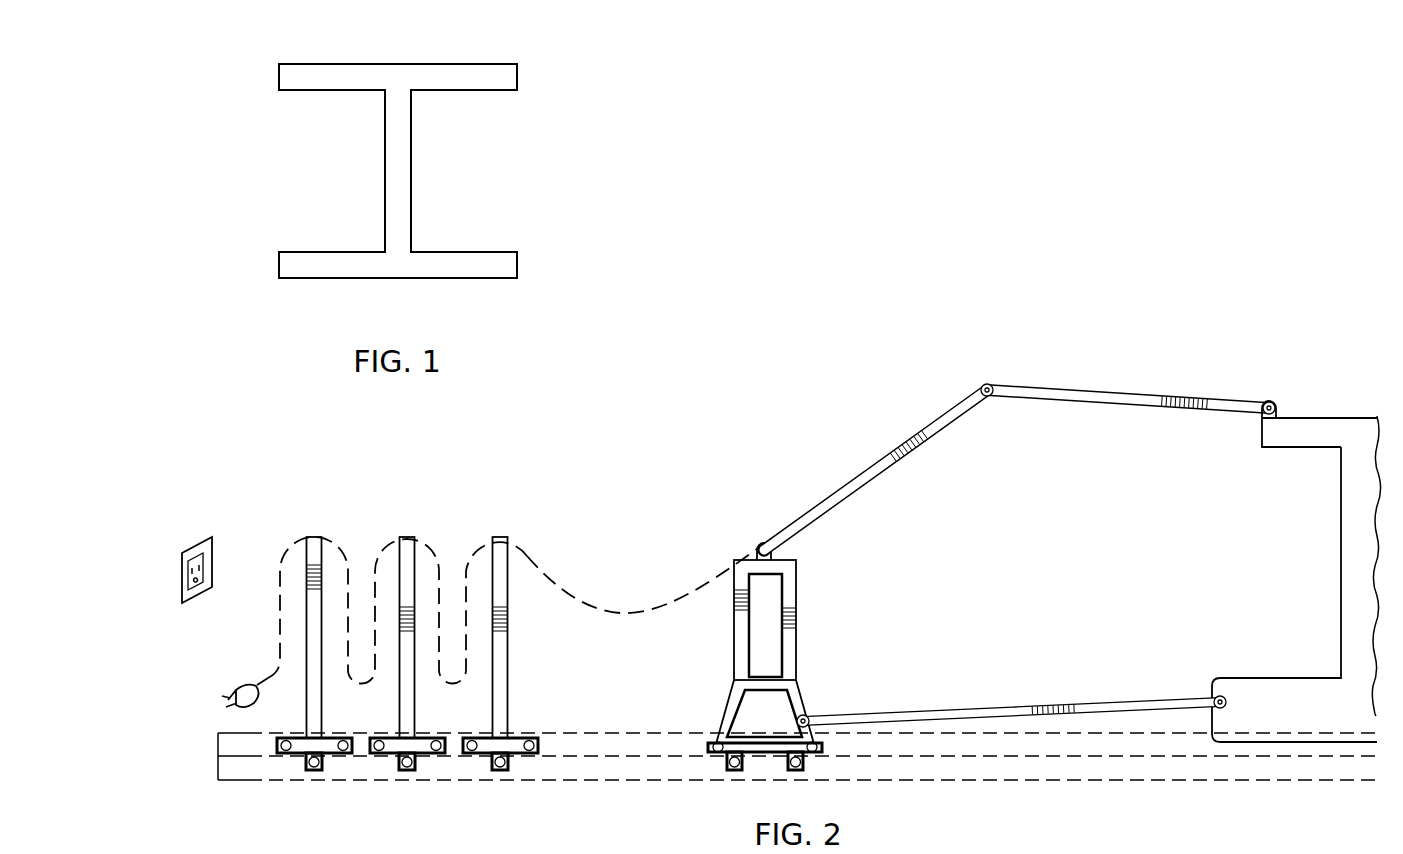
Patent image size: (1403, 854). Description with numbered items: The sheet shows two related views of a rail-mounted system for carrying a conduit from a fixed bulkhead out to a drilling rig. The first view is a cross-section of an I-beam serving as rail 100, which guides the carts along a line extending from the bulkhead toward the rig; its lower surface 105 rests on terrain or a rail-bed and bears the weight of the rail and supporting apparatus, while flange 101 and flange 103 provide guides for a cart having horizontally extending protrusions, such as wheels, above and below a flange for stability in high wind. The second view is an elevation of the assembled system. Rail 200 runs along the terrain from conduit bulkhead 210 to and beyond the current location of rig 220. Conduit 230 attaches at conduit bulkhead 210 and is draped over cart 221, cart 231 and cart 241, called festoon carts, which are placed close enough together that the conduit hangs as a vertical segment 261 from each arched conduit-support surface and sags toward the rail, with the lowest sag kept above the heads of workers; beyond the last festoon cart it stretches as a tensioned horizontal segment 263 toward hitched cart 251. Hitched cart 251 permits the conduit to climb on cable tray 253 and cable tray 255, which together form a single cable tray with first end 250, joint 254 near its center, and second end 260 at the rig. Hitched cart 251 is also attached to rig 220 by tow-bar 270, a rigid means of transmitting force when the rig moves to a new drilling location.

In FIG. 1, the rail 100 is at (262, 157).
In FIG. 1, the flange 101 is at (279, 52).
In FIG. 1, the flange 103 is at (517, 52).
In FIG. 1, the lower surface 105 is at (279, 289).
In FIG. 2, the rail 200 is at (553, 782).
In FIG. 2, the conduit bulkhead 210 is at (192, 532).
In FIG. 2, the rig 220 is at (1279, 679).
In FIG. 2, the cart 221 is at (285, 528).
In FIG. 2, the conduit 230 is at (280, 597).
In FIG. 2, the cart 231 is at (378, 528).
In FIG. 2, the cart 241 is at (471, 528).
In FIG. 2, the first end 250 is at (761, 545).
In FIG. 2, the hitched cart 251 is at (812, 616).
In FIG. 2, the cable tray 253 is at (873, 464).
In FIG. 2, the joint 254 is at (986, 382).
In FIG. 2, the cable tray 255 is at (1126, 392).
In FIG. 2, the second end 260 is at (1271, 402).
In FIG. 2, the vertical segment 261 is at (460, 683).
In FIG. 2, the tensioned horizontal segment 263 is at (623, 617).
In FIG. 2, the tow-bar 270 is at (960, 707).